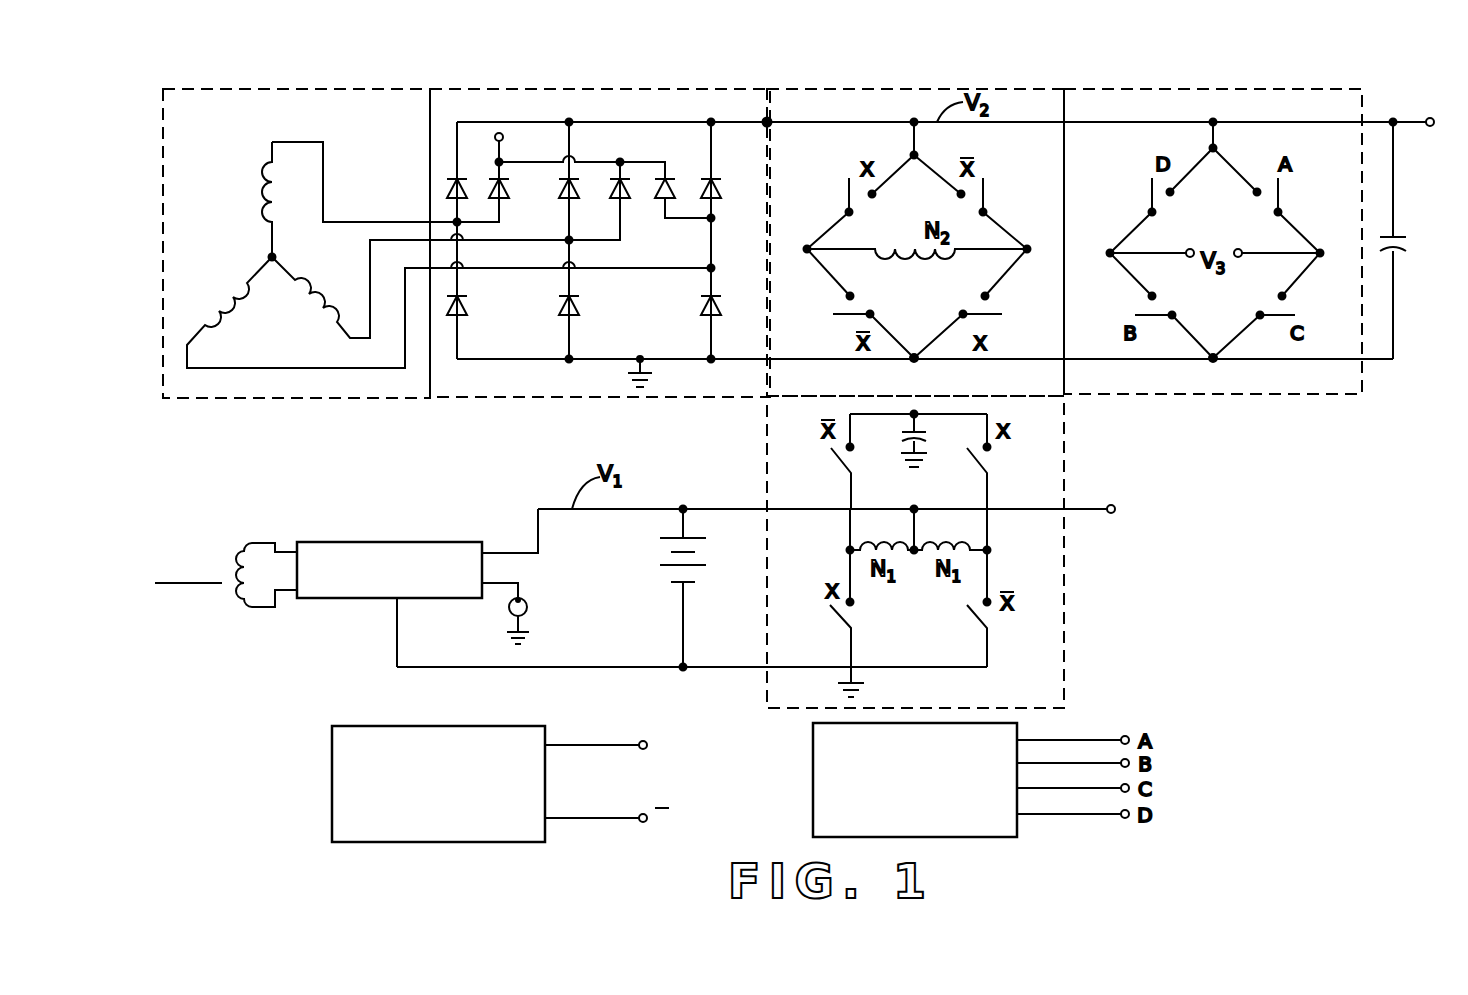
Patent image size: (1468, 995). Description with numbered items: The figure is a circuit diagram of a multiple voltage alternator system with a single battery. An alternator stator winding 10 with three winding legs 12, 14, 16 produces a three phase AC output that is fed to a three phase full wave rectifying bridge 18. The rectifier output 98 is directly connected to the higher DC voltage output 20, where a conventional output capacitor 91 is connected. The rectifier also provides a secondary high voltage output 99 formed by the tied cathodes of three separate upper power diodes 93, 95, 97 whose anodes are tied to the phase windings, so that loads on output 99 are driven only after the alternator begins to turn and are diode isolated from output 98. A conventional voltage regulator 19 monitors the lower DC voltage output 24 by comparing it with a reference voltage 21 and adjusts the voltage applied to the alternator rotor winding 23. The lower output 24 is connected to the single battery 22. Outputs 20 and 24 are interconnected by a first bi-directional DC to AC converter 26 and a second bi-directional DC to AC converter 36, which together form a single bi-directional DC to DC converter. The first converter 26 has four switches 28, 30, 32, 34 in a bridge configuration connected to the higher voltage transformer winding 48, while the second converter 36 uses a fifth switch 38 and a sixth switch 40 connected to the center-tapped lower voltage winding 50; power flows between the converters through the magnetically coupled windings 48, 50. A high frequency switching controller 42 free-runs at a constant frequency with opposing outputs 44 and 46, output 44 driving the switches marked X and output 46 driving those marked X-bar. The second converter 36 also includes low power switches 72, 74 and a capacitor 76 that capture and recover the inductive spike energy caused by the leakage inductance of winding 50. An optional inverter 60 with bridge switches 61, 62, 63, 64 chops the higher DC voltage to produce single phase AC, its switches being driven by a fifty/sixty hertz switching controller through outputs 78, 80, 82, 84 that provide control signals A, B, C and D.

The stator winding 10 is at (312, 89).
The winding leg 12 is at (253, 172).
The winding leg 14 is at (293, 290).
The winding leg 16 is at (237, 298).
The three phase full wave rectifying bridge 18 is at (612, 89).
The voltage regulator 19 is at (379, 542).
The higher DC voltage output 20 is at (1427, 119).
The reference voltage 21 is at (507, 613).
The battery 22 is at (699, 577).
The alternator rotor winding 23 is at (236, 596).
The lower DC voltage output 24 is at (1118, 506).
The first bi-directional DC to AC converter 26 is at (905, 89).
The switch 28 is at (838, 209).
The switch 30 is at (832, 305).
The switch 32 is at (956, 304).
The switch 34 is at (998, 193).
The second bi-directional DC to AC converter 36 is at (1068, 672).
The fifth switch 38 is at (836, 628).
The sixth switch 40 is at (972, 624).
The high frequency DC to DC converter switching controller 42 is at (332, 765).
The switching control output X 44 is at (598, 745).
The switching control output X-bar 46 is at (583, 818).
The higher voltage transformer winding 48 is at (911, 252).
The lower voltage transformer winding 50 is at (913, 558).
The 50/60 Hz inverter 60 is at (1210, 394).
The switch 61 is at (1148, 194).
The switch 62 is at (1150, 306).
The switch 63 is at (1270, 195).
The switch 64 is at (1272, 305).
The switch 72 is at (840, 463).
The switch 74 is at (985, 458).
The capacitor 76 is at (900, 457).
The controller output 78 is at (1080, 740).
The controller output 80 is at (1055, 763).
The controller output 82 is at (1051, 795).
The controller output 84 is at (1095, 816).
The output capacitor 91 is at (1410, 245).
The upper power diode 93 is at (508, 192).
The upper power diode 95 is at (626, 200).
The upper power diode 97 is at (665, 200).
The rectifier output 98 is at (769, 120).
The secondary high voltage output 99 is at (495, 136).